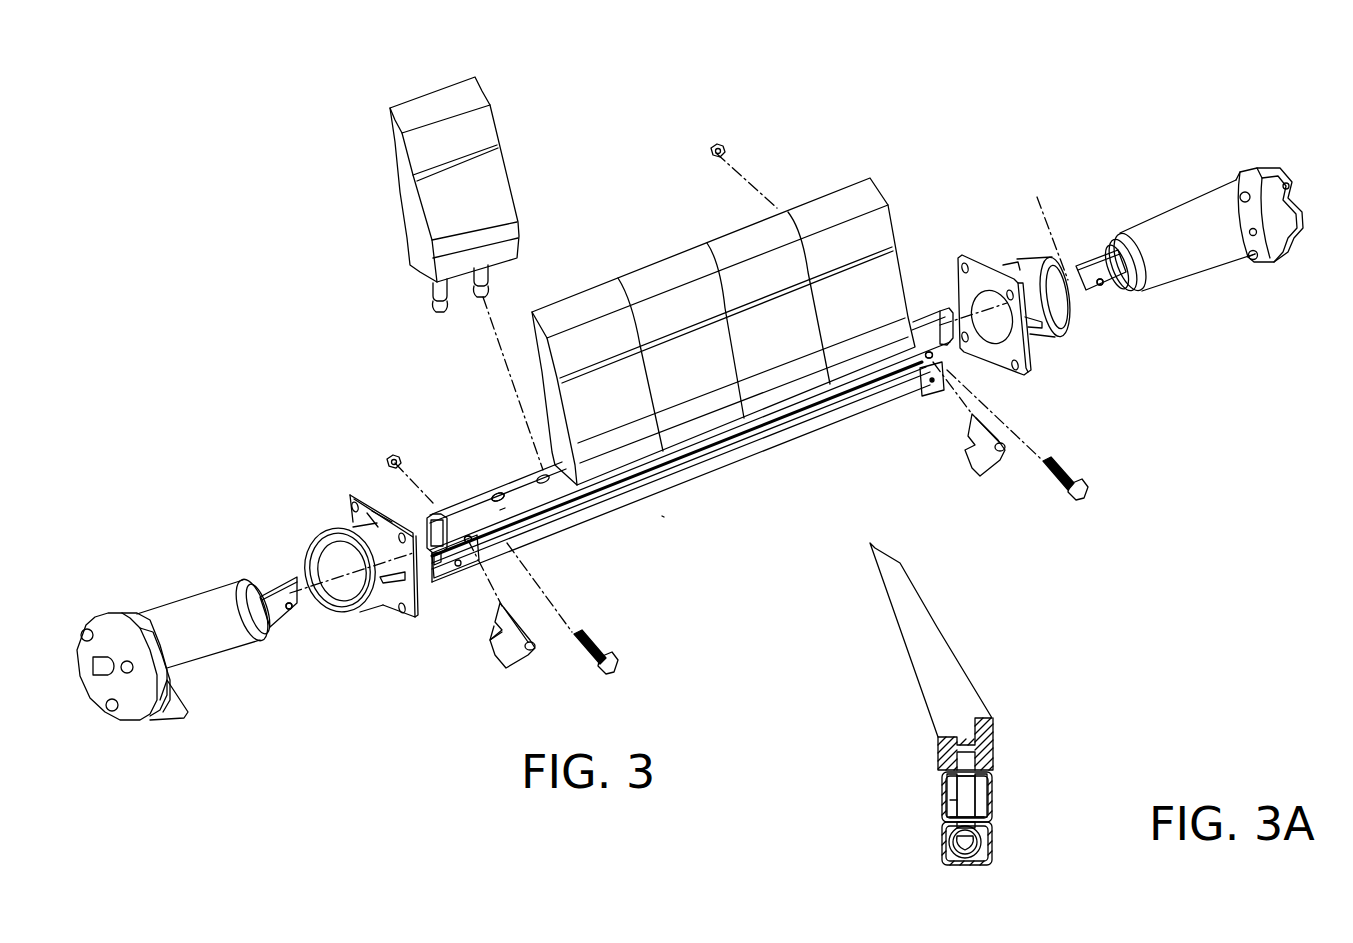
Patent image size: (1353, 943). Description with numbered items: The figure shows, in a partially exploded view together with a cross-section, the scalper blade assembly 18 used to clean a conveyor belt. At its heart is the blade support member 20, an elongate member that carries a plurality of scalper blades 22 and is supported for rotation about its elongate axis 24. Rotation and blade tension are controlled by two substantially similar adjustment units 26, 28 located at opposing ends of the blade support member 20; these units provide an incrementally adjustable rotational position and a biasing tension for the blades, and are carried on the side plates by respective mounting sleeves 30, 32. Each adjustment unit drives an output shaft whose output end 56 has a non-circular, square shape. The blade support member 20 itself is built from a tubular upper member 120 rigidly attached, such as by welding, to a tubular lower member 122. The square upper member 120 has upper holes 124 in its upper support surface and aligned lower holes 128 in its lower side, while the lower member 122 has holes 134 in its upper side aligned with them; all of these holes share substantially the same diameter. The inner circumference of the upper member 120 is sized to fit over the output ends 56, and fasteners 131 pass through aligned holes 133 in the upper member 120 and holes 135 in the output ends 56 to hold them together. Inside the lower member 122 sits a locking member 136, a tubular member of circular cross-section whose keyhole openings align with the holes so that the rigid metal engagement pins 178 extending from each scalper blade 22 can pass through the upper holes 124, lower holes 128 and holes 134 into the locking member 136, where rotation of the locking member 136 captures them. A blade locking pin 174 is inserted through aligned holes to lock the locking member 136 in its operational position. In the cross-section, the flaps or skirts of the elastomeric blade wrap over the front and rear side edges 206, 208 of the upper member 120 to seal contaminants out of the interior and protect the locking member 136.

In FIG. 3, the scalper blade assembly 18 is at (906, 151).
In FIG. 3, the blade support member 20 is at (652, 507).
In FIG. 3, the scalper blades 22 is at (500, 173).
In FIG. 3A, the scalper blades 22 is at (897, 628).
In FIG. 3, the elongate axis 24 is at (1004, 273).
In FIG. 3, the adjustment unit 26 is at (175, 558).
In FIG. 3, the adjustment unit 28 is at (1193, 287).
In FIG. 3, the mounting sleeve 30 is at (328, 532).
In FIG. 3, the mounting sleeve 32 is at (1068, 328).
In FIG. 3, the output end 56 is at (288, 580).
In FIG. 3, the tubular upper member 120 is at (460, 505).
In FIG. 3A, the tubular upper member 120 is at (995, 800).
In FIG. 3, the tubular lower member 122 is at (720, 465).
In FIG. 3A, the tubular lower member 122 is at (996, 849).
In FIG. 3, the upper holes 124 is at (500, 480).
In FIG. 3A, the upper holes 124 is at (962, 774).
In FIG. 3A, the lower holes 128 is at (975, 820).
In FIG. 3, the fasteners 131 is at (600, 640).
In FIG. 3, the holes 133 is at (470, 541).
In FIG. 3A, the holes 134 is at (968, 823).
In FIG. 3, the holes 135 is at (298, 606).
In FIG. 3A, the locking member 136 is at (943, 857).
In FIG. 3, the blade locking pin 174 is at (540, 618).
In FIG. 3A, the engagement pins 178 is at (955, 793).
In FIG. 3, the front side edge 206 is at (395, 480).
In FIG. 3A, the front side edge 206 is at (948, 778).
In FIG. 3, the rear side edge 208 is at (500, 510).
In FIG. 3A, the rear side edge 208 is at (982, 776).